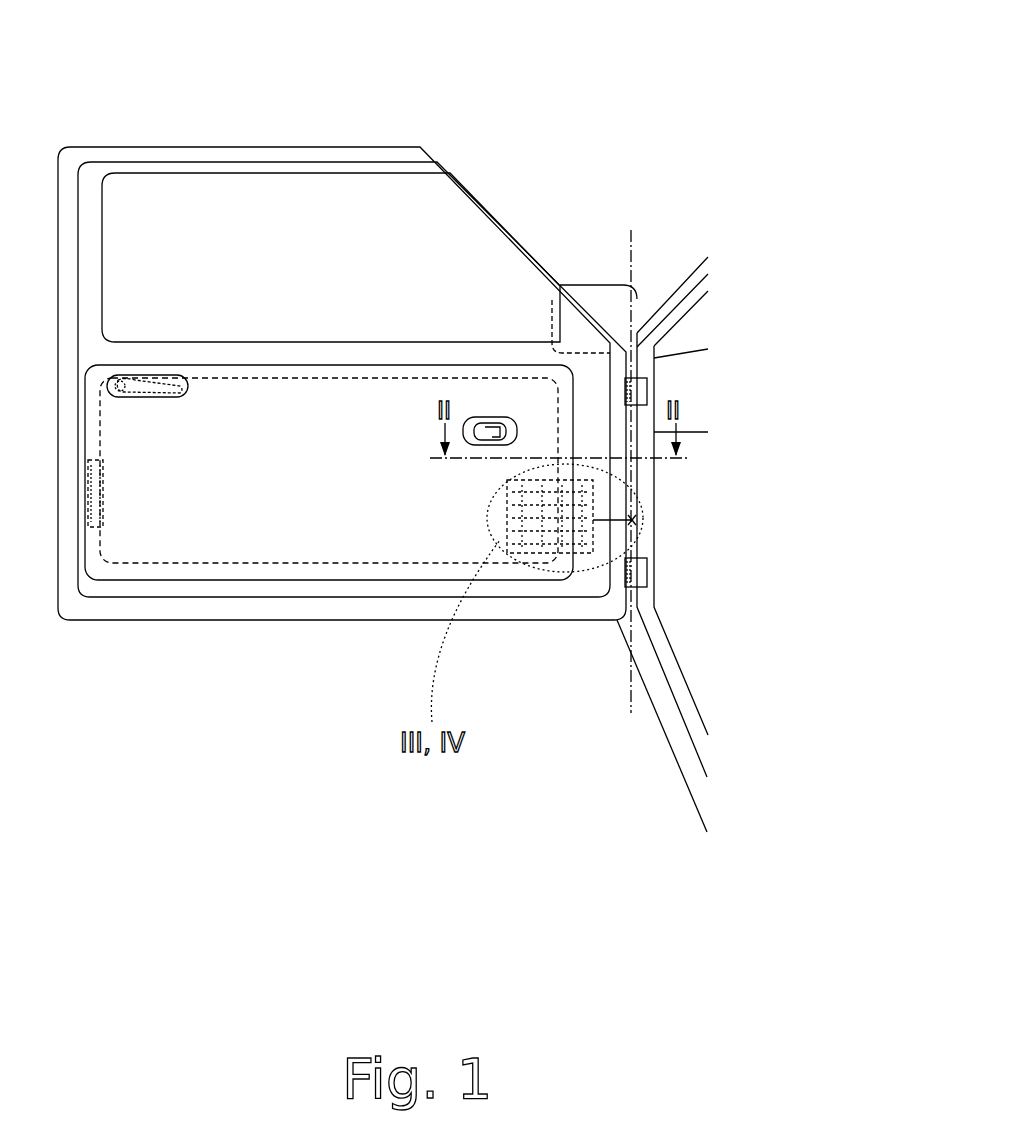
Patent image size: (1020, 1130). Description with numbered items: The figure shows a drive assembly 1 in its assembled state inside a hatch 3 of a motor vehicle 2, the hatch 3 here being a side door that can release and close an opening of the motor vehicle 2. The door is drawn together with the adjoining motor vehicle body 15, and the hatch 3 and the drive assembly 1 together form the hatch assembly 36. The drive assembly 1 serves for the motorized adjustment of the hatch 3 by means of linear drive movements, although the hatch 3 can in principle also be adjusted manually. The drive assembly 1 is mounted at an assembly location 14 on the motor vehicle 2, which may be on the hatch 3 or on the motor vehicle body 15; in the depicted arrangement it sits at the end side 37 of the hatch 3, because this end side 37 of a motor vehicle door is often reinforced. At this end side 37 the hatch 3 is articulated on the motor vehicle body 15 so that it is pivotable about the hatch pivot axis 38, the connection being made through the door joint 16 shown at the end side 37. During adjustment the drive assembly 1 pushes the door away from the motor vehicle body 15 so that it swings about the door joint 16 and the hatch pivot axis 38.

The drive assembly 1 is at (470, 493).
The motor vehicle 2 is at (696, 271).
The hatch 3 is at (242, 150).
The assembly location 14 is at (593, 558).
The motor vehicle body 15 is at (678, 687).
The door joint 16 is at (648, 385).
The hatch assembly 36 is at (556, 58).
The end side 37 is at (676, 336).
The hatch pivot axis 38 is at (630, 672).